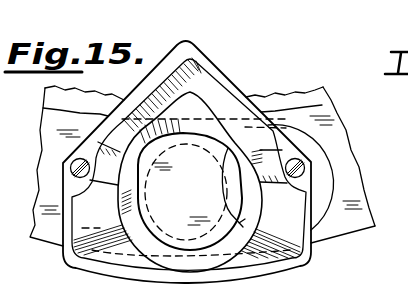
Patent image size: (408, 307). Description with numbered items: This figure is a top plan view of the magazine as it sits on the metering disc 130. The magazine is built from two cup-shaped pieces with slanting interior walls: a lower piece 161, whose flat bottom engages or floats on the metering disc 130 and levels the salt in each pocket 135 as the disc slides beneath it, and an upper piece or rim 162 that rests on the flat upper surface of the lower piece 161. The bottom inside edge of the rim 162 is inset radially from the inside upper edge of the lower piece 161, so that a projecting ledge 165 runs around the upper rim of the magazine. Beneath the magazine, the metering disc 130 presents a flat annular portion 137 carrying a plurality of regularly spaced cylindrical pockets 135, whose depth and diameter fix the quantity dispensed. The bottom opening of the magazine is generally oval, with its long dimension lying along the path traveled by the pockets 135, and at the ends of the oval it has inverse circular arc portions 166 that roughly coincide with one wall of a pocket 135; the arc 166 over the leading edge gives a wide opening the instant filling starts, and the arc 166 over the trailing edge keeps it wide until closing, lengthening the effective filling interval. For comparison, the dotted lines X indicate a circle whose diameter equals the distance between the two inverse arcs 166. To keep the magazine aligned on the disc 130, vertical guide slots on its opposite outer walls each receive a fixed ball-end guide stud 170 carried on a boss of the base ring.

The metering disc 130 is at (354, 232).
The cylindrical openings or pockets 135 is at (332, 162).
The flat annular portion 137 is at (55, 234).
The lower piece 161 is at (190, 173).
The upper piece or rim 162 is at (241, 90).
The bottom inside edge / projecting ledge 165 is at (210, 107).
The inverse circular arc portions 166 is at (240, 187).
The ball-end guide stud 170 is at (365, 156).
The dotted-line circle X is at (182, 145).